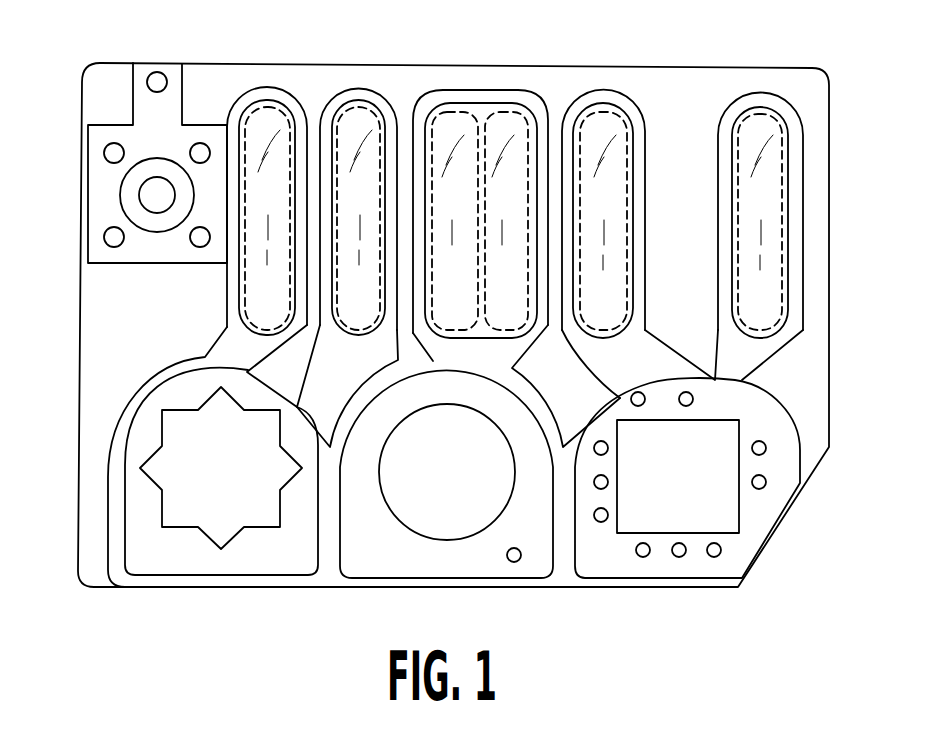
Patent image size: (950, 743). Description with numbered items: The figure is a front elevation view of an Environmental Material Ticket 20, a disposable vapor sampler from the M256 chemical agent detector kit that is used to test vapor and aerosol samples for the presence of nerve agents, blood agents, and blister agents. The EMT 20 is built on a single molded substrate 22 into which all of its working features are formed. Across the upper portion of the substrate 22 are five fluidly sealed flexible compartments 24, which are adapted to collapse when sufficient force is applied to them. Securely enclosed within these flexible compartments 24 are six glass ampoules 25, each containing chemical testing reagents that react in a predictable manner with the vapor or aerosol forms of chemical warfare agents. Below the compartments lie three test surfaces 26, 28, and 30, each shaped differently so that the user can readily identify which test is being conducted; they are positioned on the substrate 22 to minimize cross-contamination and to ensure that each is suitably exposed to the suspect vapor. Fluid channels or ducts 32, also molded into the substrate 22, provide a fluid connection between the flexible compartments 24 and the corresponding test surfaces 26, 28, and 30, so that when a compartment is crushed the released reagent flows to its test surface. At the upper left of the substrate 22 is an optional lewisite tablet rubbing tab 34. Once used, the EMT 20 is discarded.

The Environmental Material Ticket 20 is at (163, 304).
The substrate 22 is at (822, 120).
The flexible compartments 24 is at (270, 103).
The glass ampoules 25 is at (228, 38).
The test surface 26 is at (213, 527).
The test surface 28 is at (437, 515).
The test surface 30 is at (715, 511).
The fluid channels 32 is at (297, 388).
The lewisite tablet rubbing tab 34 is at (95, 190).